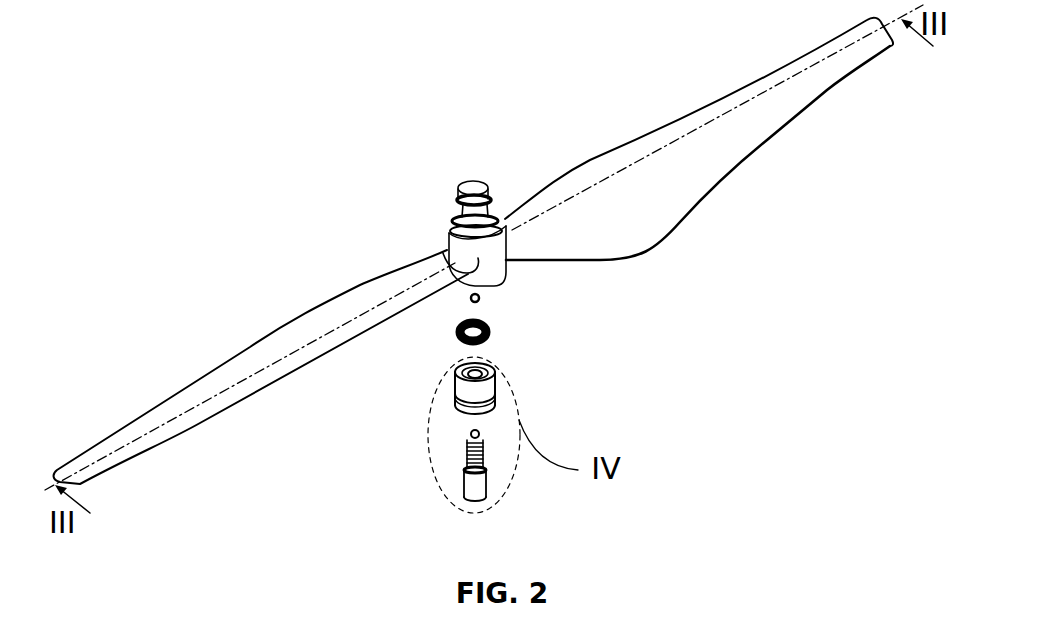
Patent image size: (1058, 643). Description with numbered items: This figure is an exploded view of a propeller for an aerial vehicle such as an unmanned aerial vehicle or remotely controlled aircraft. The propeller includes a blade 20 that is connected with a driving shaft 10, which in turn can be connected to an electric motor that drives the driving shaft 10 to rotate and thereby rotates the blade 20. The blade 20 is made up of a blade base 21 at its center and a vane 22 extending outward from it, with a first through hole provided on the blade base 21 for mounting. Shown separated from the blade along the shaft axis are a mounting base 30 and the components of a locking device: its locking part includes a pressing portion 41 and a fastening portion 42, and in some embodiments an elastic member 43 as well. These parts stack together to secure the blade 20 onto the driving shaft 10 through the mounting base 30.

The driving shaft 10 is at (484, 497).
The blade 20 is at (568, 150).
The blade base 21 is at (447, 243).
The vane 22 is at (750, 88).
The mounting base 30 is at (496, 398).
The pressing portion 41 is at (470, 185).
The fastening portion 42 is at (483, 297).
The elastic member 43 is at (493, 335).